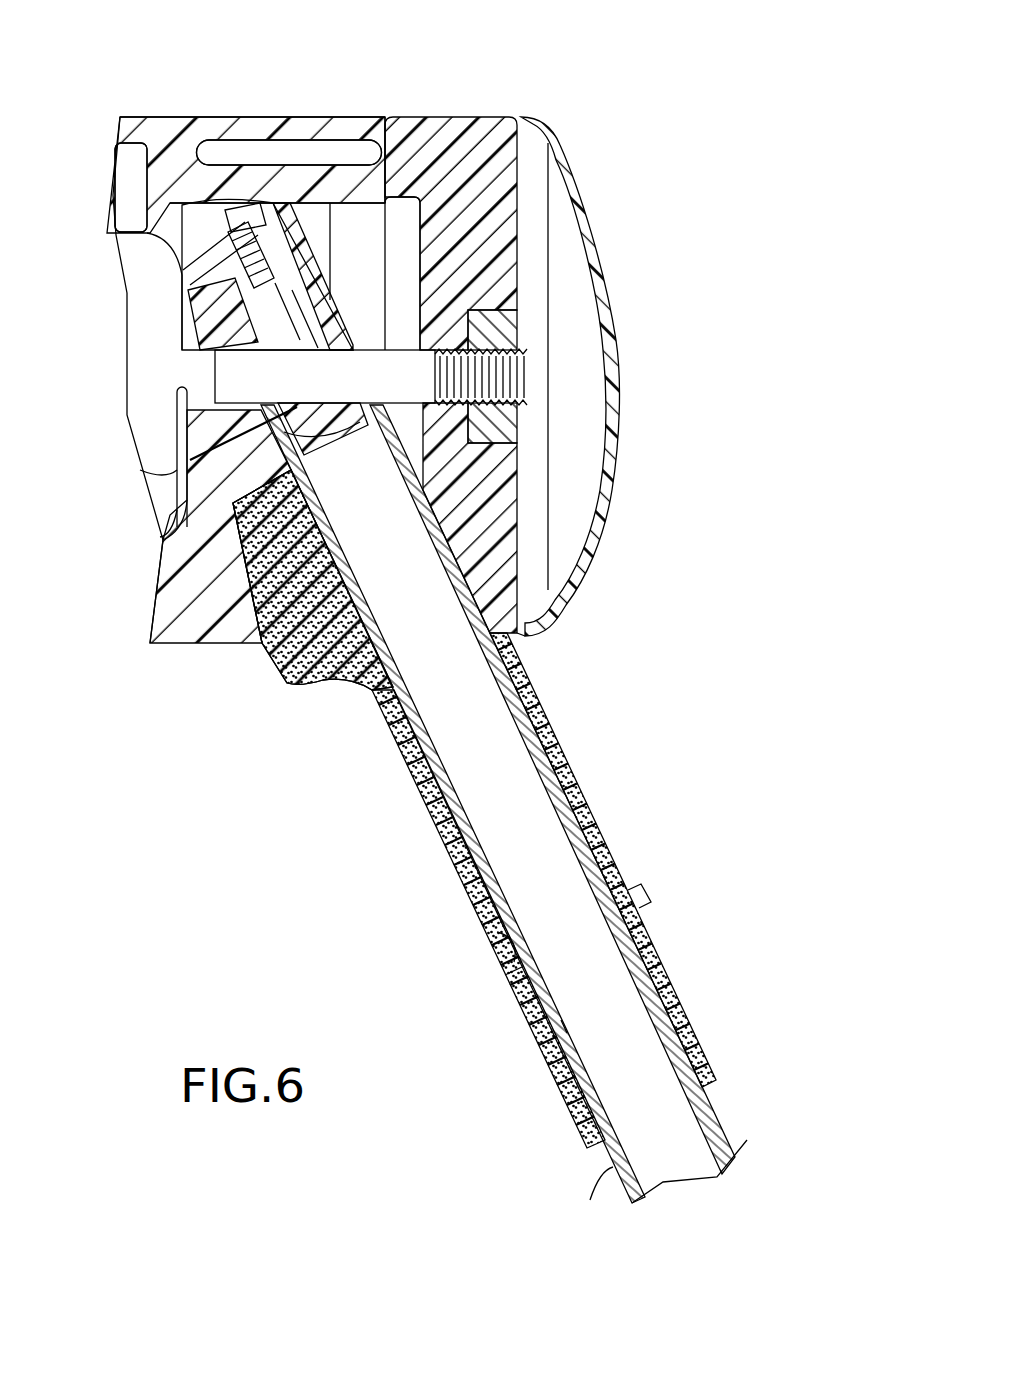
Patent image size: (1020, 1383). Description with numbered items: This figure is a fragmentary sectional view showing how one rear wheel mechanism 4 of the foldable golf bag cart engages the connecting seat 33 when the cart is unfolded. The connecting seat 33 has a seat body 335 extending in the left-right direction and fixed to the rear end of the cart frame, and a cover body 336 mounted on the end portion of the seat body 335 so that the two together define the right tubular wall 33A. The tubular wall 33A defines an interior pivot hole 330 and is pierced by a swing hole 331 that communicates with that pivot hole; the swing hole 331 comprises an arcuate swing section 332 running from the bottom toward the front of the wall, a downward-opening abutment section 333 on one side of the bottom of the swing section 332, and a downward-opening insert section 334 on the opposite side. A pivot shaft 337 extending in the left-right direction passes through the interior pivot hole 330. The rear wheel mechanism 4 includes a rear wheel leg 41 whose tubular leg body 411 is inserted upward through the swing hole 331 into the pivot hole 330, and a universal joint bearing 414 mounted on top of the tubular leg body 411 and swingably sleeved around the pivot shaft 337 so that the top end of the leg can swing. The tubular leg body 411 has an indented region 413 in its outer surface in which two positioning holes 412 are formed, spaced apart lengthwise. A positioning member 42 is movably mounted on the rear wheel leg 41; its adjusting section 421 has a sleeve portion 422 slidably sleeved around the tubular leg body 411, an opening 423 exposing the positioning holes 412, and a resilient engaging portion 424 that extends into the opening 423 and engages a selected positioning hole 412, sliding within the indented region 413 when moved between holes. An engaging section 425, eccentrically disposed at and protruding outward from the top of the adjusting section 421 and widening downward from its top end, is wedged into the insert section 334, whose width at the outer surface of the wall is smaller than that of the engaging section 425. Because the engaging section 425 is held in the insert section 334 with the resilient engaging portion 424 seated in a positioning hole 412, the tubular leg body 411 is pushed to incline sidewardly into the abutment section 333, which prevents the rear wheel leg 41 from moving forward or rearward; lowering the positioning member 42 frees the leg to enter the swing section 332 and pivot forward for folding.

The connecting seat 33 is at (186, 110).
The right tubular wall 33A is at (386, 118).
The seat body 335 is at (263, 138).
The cover body 336 is at (462, 132).
The interior pivot hole 330 is at (360, 224).
The swing section 332 is at (370, 273).
The pivot shaft 337 is at (510, 373).
The abutment section 333 is at (458, 488).
The swing hole 331 is at (468, 573).
The universal joint bearing 414 is at (250, 459).
The insert section 334 is at (253, 583).
The engaging section 425 is at (286, 690).
The sleeve portion 422 is at (432, 812).
The adjusting section 421 is at (528, 665).
The positioning holes 412 is at (537, 937).
The resilient engaging portion 424 is at (508, 938).
The opening 423 is at (508, 980).
The positioning member 42 is at (500, 838).
The rear wheel mechanism 4 is at (514, 830).
The rear wheel leg 41 is at (530, 830).
The tubular leg body 411 is at (620, 1168).
The indented region 413 is at (561, 1027).